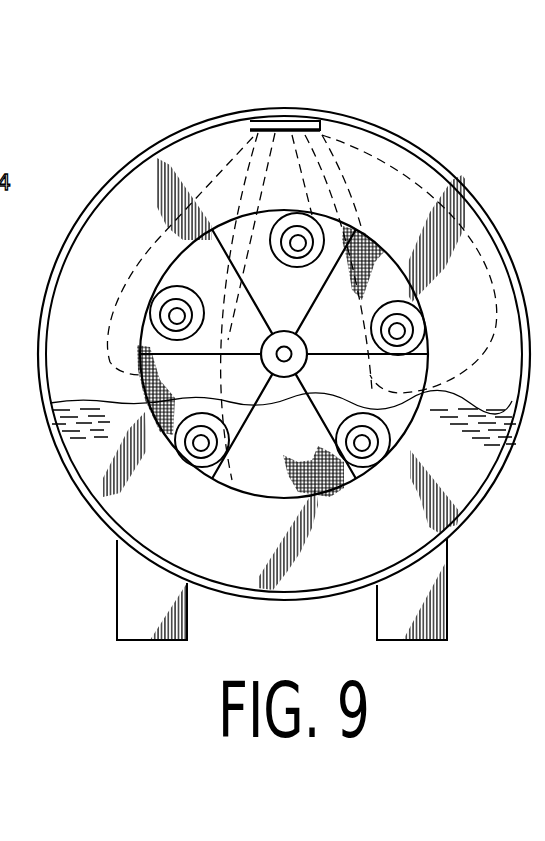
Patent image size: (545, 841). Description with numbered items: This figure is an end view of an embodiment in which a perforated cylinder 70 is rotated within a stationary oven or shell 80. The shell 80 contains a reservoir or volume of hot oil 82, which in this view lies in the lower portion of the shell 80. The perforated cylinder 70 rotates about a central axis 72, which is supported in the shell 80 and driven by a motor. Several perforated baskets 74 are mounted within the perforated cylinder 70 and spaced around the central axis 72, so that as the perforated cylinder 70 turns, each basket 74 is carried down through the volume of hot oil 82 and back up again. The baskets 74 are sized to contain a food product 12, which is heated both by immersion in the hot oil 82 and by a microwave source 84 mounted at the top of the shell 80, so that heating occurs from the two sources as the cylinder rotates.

The food product 12 is at (372, 426).
The perforated cylinder 70 is at (232, 228).
The central axis 72 is at (262, 360).
The perforated basket 74 is at (365, 448).
The shell 80 is at (400, 132).
The volume of hot oil 82 is at (97, 430).
The microwave source 84 is at (279, 110).